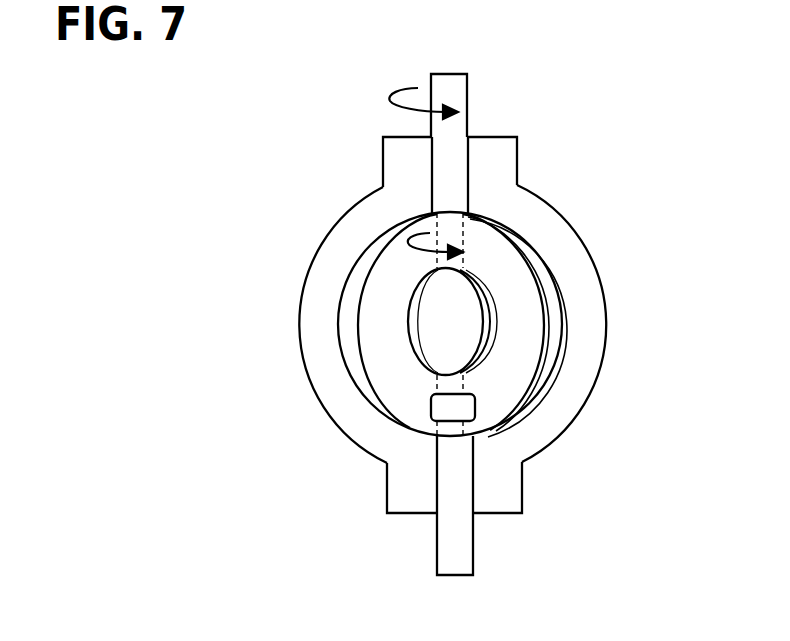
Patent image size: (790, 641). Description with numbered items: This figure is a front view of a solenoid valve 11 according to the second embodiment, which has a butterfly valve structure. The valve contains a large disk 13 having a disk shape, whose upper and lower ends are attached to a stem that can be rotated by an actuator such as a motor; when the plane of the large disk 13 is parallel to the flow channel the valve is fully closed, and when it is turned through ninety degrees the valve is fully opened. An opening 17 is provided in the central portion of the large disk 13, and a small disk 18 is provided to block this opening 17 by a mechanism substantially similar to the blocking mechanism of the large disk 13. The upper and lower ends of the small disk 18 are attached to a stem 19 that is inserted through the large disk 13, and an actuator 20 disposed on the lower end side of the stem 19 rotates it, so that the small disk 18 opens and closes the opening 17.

The solenoid valve 11 is at (606, 149).
The large disk 13 is at (488, 447).
The opening 17 is at (497, 306).
The small disk 18 is at (467, 350).
The stem 19 is at (463, 233).
The actuator 20 is at (475, 404).